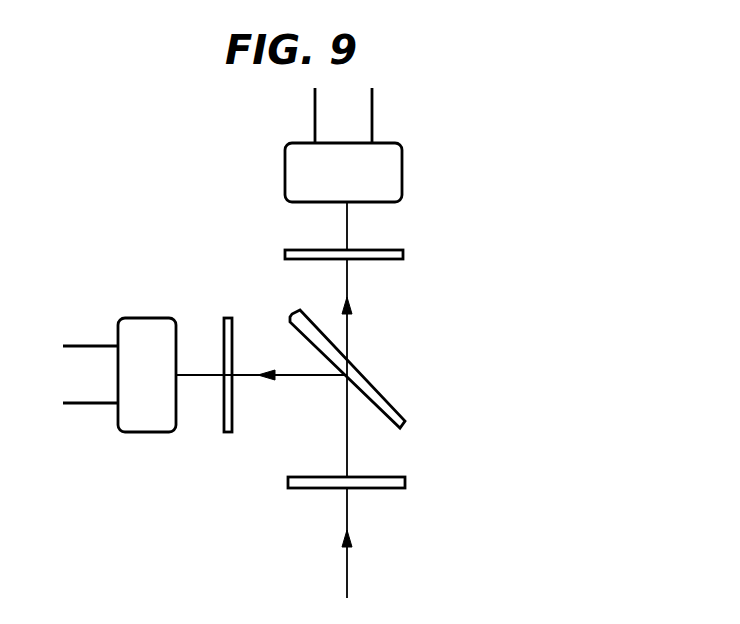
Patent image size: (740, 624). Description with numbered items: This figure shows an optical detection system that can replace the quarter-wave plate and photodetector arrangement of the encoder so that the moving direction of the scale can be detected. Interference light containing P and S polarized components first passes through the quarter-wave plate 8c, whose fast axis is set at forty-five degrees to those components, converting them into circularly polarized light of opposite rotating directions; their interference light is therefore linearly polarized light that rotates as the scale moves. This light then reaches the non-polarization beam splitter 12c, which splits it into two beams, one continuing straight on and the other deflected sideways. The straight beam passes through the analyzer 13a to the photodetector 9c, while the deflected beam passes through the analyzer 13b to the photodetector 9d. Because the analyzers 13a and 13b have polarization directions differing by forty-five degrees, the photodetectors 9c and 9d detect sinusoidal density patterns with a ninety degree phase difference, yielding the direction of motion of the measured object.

The photodetector 9c is at (402, 167).
The photodetector 9d is at (150, 313).
The analyzer 13a is at (392, 247).
The analyzer 13b is at (227, 433).
The non-polarization beam splitter 12c is at (388, 407).
The quarter-wave plate 8c is at (405, 480).